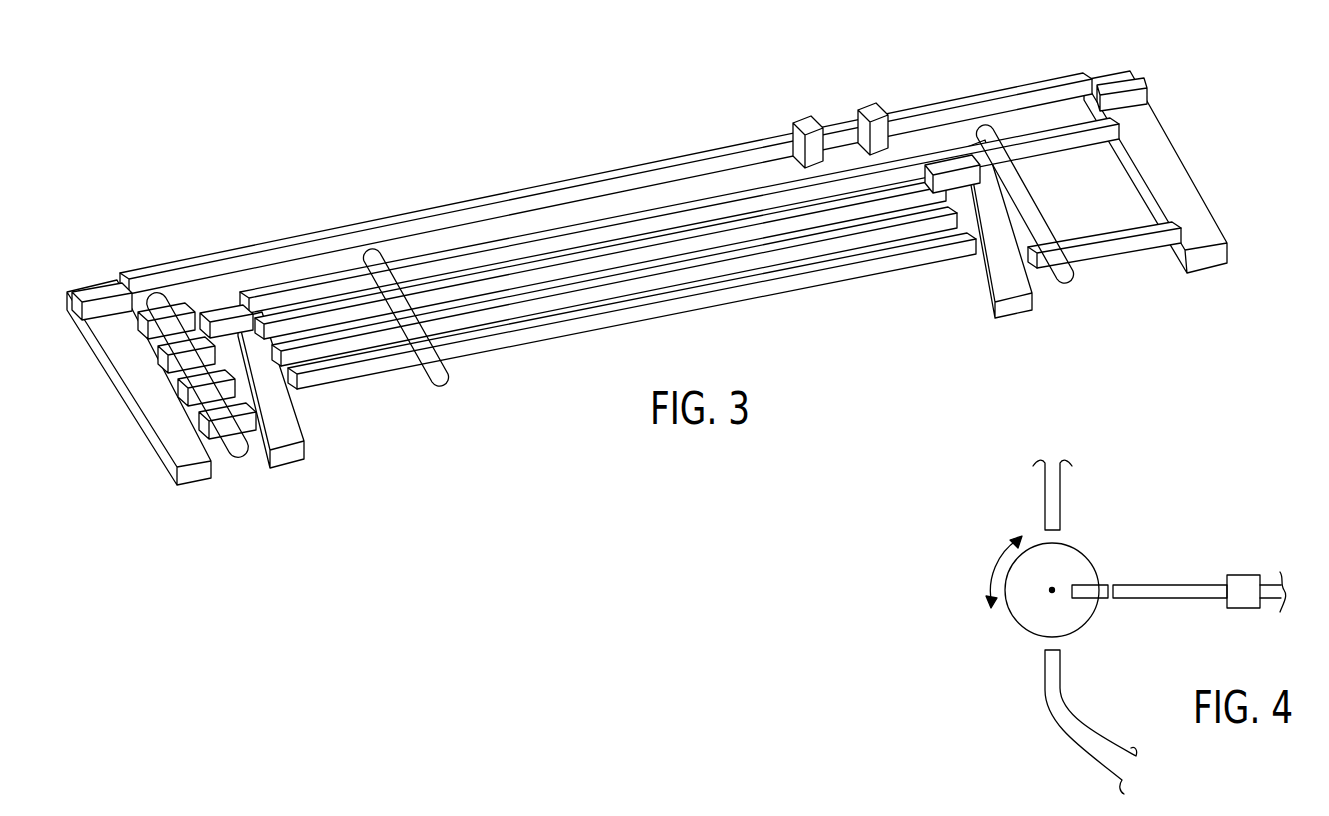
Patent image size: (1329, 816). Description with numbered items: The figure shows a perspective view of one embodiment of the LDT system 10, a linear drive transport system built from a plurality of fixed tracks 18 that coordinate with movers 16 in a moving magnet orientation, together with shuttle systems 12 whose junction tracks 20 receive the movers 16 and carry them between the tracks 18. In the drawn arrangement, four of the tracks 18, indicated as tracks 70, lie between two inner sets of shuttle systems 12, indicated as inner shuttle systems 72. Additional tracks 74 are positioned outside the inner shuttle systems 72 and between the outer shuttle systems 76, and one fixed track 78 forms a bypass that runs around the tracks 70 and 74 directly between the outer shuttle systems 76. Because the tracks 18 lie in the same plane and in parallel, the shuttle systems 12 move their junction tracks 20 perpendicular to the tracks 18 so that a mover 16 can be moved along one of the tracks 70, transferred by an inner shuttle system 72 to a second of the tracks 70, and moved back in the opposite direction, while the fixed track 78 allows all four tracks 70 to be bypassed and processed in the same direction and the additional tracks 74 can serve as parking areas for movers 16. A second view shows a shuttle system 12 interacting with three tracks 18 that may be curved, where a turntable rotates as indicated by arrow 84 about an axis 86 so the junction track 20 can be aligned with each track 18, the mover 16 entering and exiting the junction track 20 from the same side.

In FIG. 3, the LDT system 10 is at (687, 319).
In FIG. 3, the shuttle system 12 is at (687, 314).
In FIG. 4, the shuttle system 12 is at (1009, 652).
In FIG. 3, the mover 16 is at (862, 107).
In FIG. 4, the mover 16 is at (1248, 575).
In FIG. 3, the fixed track 18 is at (208, 433).
In FIG. 4, the fixed track 18 is at (1045, 497).
In FIG. 3, the junction track 20 is at (84, 292).
In FIG. 3, the four tracks 70 is at (370, 250).
In FIG. 3, the inner shuttle systems 72 is at (262, 482).
In FIG. 3, the additional tracks 74 is at (158, 298).
In FIG. 3, the outer shuttle systems 76 is at (165, 502).
In FIG. 3, the fixed track 78 is at (630, 256).
In FIG. 4, the arrow 84 is at (993, 565).
In FIG. 4, the axis 86 is at (1052, 590).